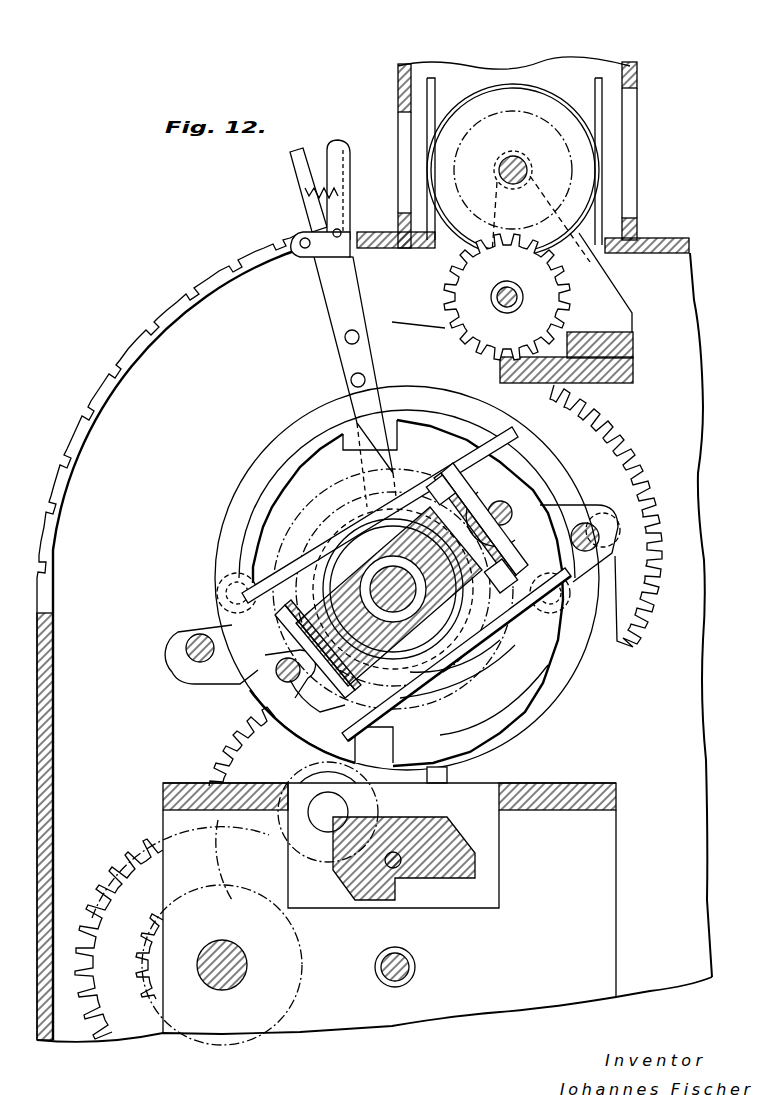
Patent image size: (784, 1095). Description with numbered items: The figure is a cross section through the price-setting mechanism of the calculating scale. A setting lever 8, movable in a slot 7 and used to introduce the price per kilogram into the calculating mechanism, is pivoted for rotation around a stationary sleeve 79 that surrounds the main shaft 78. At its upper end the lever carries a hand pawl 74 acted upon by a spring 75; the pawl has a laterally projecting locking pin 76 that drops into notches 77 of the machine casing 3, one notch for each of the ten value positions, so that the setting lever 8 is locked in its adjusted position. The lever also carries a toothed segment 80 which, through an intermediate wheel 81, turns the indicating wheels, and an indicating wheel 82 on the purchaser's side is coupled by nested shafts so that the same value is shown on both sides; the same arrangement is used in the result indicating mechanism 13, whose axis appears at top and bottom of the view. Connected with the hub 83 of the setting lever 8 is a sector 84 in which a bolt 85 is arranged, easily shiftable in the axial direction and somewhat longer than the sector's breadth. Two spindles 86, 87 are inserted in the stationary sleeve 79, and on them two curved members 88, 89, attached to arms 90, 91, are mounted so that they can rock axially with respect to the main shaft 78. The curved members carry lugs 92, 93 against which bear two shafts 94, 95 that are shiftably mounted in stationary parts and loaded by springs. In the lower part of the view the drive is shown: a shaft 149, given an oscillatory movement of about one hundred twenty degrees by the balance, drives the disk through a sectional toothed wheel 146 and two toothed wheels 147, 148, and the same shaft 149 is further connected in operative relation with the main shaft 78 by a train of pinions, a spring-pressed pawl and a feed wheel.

The machine casing 3 is at (50, 588).
The slots 7 is at (186, 310).
The setting levers 8 is at (292, 162).
The result indicating mechanism 13 is at (513, 78).
The hand pawl 74 is at (340, 158).
The spring 75 is at (330, 190).
The locking pin 76 is at (340, 230).
The notches 77 is at (238, 268).
The main shaft 78 is at (338, 522).
The stationary sleeve 79 is at (320, 530).
The toothed segments 80 is at (605, 443).
The intermediate wheels 81 is at (540, 296).
The indicating wheels 82 is at (582, 170).
The hubs 83 is at (425, 700).
The sectors 84 is at (312, 440).
The bolt 85 is at (225, 580).
The spindle 86 is at (332, 712).
The spindle 87 is at (455, 520).
The curved member 88 is at (520, 494).
The curved member 89 is at (228, 620).
The arm 90 is at (368, 500).
The arm 91 is at (420, 490).
The lug 92 is at (498, 538).
The lug 93 is at (258, 660).
The shaft 94 is at (518, 505).
The shaft 95 is at (280, 680).
The sectional toothed wheel 146 is at (530, 670).
The toothed wheel 147 is at (220, 762).
The toothed wheel 148 is at (150, 948).
The shaft 149 is at (240, 958).